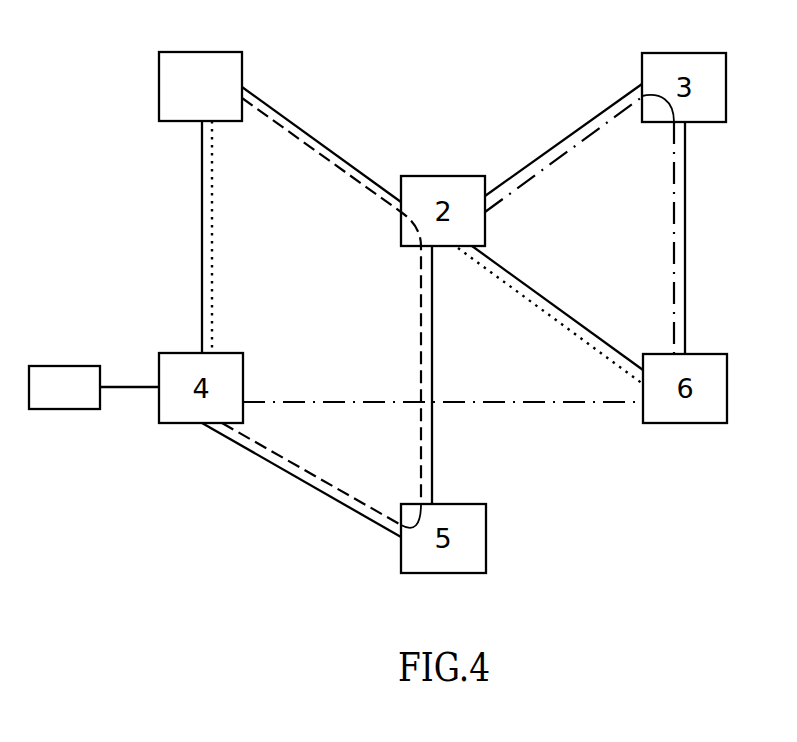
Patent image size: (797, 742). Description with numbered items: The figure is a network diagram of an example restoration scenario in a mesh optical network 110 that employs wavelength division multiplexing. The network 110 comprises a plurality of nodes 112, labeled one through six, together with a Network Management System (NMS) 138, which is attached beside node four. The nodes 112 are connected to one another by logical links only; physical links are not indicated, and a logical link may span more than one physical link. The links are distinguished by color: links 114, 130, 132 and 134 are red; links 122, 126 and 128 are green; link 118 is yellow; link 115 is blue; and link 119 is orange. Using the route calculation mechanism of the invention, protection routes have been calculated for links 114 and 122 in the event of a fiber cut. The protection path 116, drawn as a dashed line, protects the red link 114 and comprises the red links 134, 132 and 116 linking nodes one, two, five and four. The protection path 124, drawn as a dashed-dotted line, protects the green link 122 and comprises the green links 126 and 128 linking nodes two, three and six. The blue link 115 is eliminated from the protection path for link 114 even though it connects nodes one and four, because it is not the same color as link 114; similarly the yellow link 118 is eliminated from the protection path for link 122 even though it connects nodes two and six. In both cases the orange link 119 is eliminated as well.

The network 110 is at (140, 516).
The nodes 112 is at (217, 52).
The link 114 is at (200, 252).
The link 115 is at (213, 303).
The protection path 116 is at (285, 134).
The link 118 is at (560, 323).
The link 119 is at (572, 405).
The link 122 is at (527, 285).
The protection path 124 is at (552, 165).
The link 126 is at (586, 127).
The link 128 is at (685, 268).
The link 130 is at (304, 130).
The link 132 is at (434, 443).
The link 134 is at (348, 508).
The Network Management System (NMS) 138 is at (65, 365).